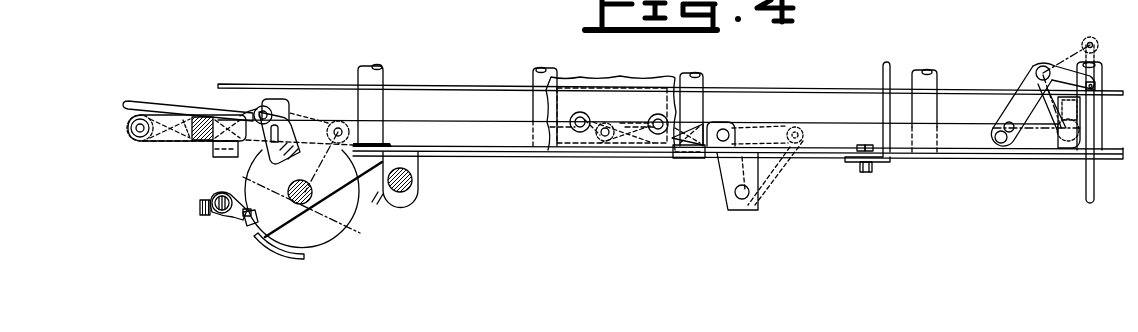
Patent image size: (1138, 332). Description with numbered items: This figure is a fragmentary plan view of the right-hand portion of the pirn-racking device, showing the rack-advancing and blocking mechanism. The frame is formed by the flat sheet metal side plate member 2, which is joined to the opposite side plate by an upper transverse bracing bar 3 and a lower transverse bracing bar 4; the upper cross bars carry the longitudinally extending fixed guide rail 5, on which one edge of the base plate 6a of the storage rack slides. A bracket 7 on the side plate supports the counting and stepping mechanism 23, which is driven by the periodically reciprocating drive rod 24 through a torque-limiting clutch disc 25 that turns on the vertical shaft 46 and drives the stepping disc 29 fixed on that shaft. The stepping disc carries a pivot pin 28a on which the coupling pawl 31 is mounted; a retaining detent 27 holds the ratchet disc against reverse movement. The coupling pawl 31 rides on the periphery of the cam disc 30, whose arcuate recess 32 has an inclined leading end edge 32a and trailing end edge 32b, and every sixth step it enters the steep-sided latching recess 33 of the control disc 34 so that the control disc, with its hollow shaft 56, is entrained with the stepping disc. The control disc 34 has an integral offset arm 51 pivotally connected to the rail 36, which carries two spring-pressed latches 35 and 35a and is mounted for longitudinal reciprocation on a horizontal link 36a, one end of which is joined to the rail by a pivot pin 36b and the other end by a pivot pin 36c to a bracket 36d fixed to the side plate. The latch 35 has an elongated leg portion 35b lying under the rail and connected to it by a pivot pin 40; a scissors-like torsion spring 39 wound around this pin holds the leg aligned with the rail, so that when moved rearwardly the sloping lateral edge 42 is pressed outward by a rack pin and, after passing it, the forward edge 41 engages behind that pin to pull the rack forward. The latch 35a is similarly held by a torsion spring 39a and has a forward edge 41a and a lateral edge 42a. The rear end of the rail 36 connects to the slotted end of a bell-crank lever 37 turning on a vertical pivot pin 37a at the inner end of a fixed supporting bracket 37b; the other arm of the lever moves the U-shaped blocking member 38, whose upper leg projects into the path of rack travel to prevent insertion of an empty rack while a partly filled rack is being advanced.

The side plate member 2 is at (960, 155).
The upper transverse bracing bar 3 is at (535, 72).
The lower transverse bracing bar 4 is at (383, 68).
The fixed guide rail 5 is at (478, 85).
The base plate 6a is at (604, 78).
The bracket 7 is at (418, 170).
The counting and stepping mechanism 23 is at (334, 252).
The drive rod 24 is at (138, 101).
The clutch disc 25 is at (274, 98).
The retaining detent 27 is at (396, 200).
The pivot pin 28a is at (220, 212).
The stepping disc 29 is at (212, 199).
The cam disc 30 is at (352, 220).
The coupling pawl 31 is at (232, 221).
The arcuate recess 32 is at (280, 247).
The leading end edge 32a is at (318, 254).
The trailing end edge 32b is at (252, 224).
The latching recess 33 is at (252, 212).
The control disc 34 is at (325, 190).
The latch 35 is at (229, 157).
The latch 35a is at (693, 160).
The leg portion 35b is at (128, 120).
The rail 36 is at (489, 147).
The link 36a is at (720, 170).
The pivot pin 36b is at (806, 112).
The pivot pin 36c is at (745, 200).
The bracket 36d is at (759, 199).
The bell-crank lever 37 is at (1023, 72).
The pivot pin 37a is at (1041, 66).
The supporting bracket 37b is at (1038, 142).
The blocking member 38 is at (1083, 198).
The torsion spring 39 is at (166, 134).
The torsion spring 39a is at (626, 142).
The pivot pin 40 is at (130, 129).
The forward edge 41 is at (203, 136).
The forward edge 41a is at (668, 145).
The sloping lateral edge 42 is at (242, 108).
The lateral edge 42a is at (694, 132).
The vertical shaft 46 is at (292, 184).
The arm 51 is at (296, 116).
The hollow shaft 56 is at (313, 187).